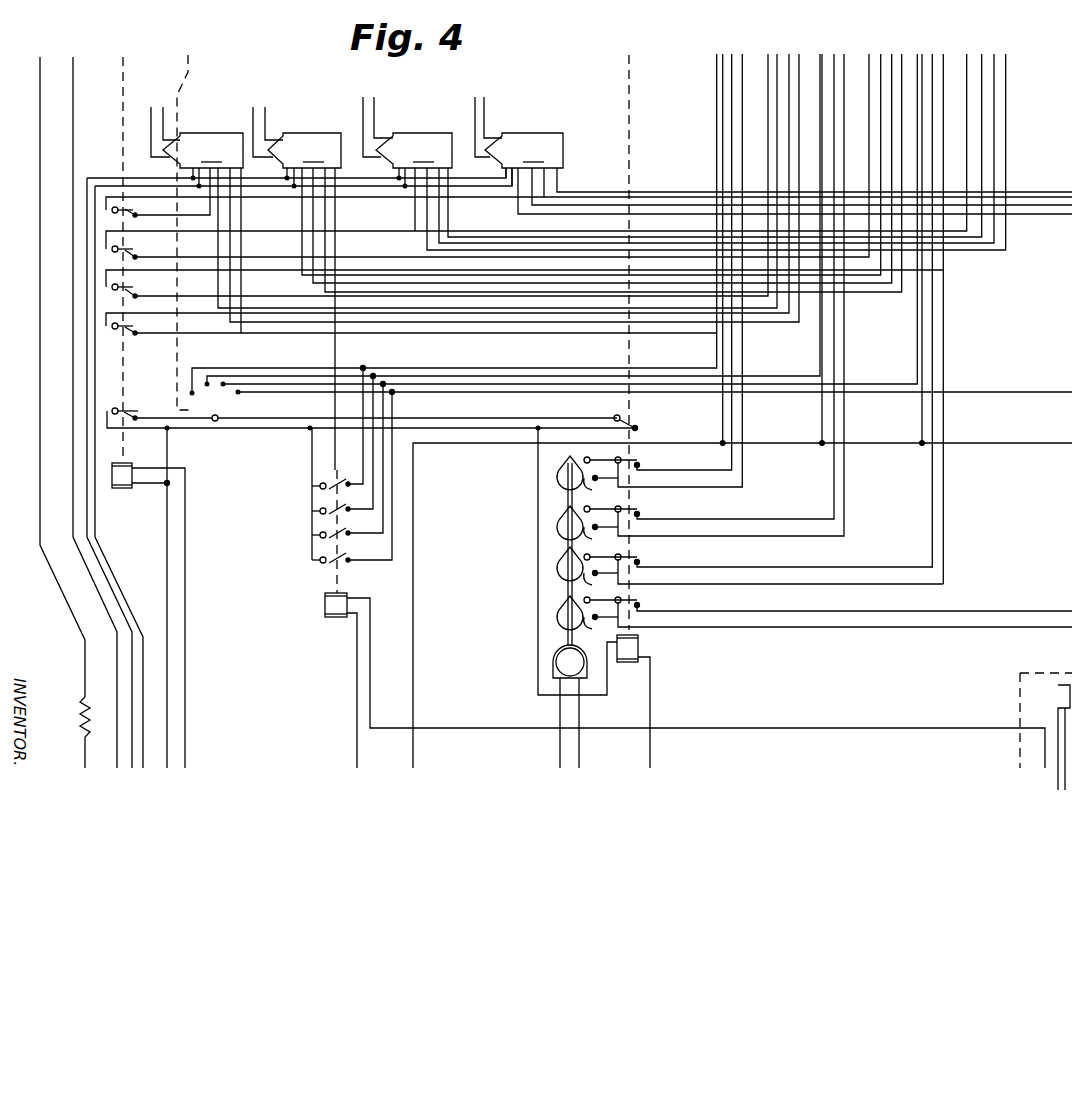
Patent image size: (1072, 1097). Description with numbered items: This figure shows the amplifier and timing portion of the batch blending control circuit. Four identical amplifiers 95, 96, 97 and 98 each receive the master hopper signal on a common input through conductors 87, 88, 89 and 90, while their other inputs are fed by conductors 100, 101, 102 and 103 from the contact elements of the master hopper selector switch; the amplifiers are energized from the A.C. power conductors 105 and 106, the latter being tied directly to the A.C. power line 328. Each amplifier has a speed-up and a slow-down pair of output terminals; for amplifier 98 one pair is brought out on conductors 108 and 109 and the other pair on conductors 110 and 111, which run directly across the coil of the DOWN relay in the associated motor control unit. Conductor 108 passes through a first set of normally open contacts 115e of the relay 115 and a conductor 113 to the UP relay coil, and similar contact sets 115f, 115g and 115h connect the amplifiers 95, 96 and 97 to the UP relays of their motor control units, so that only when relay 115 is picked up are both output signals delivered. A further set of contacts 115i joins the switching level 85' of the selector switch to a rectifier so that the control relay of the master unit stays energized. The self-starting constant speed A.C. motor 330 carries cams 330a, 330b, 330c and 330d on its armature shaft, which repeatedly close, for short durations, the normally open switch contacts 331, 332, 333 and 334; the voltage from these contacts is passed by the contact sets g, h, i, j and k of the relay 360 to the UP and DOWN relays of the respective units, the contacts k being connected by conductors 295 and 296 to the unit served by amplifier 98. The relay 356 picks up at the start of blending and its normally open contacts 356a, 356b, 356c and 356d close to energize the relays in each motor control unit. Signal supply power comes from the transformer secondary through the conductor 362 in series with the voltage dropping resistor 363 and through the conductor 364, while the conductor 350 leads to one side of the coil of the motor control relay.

The amplifier 95 is at (197, 146).
The amplifier 96 is at (297, 146).
The amplifier 97 is at (407, 141).
The amplifier 98 is at (519, 141).
The conductor 100 is at (151, 119).
The conductor 101 is at (253, 111).
The conductor 102 is at (363, 112).
The conductor 103 is at (475, 112).
The conductor 87 is at (163, 112).
The conductor 88 is at (265, 112).
The conductor 89 is at (374, 104).
The conductor 90 is at (484, 104).
The A.C. power conductor 105 is at (160, 170).
The A.C. power conductor 106 is at (110, 178).
The conductor 108 is at (153, 203).
The conductor 109 is at (527, 199).
The conductor 110 is at (560, 179).
The conductor 111 is at (558, 191).
The conductor 113 is at (284, 218).
The relay 115 is at (143, 455).
The relay contacts 115e is at (132, 213).
The relay contacts 115f is at (140, 254).
The relay contacts 115g is at (140, 293).
The relay contacts 115h is at (140, 332).
The relay contacts 115i is at (143, 412).
The switching level 85' is at (236, 430).
The conductor 362 is at (56, 590).
The resistor 363 is at (82, 713).
The conductor 364 is at (70, 477).
The relay 356 is at (320, 614).
The relay contacts 356a is at (350, 462).
The relay contacts 356b is at (320, 514).
The relay contacts 356c is at (317, 538).
The relay contacts 356d is at (326, 564).
The A.C. motor 330 is at (561, 658).
The cam 330a is at (555, 478).
The cam 330b is at (555, 525).
The cam 330c is at (555, 571).
The cam 330d is at (555, 619).
The switch contacts 331 is at (600, 487).
The switch contacts 332 is at (568, 541).
The switch contacts 333 is at (563, 590).
The switch contacts 334 is at (560, 636).
The relay 360 is at (646, 640).
The conductor 296 is at (1018, 608).
The conductor 295 is at (1010, 628).
The A.C. power line 328 is at (1056, 705).
The conductor 350 is at (1066, 674).
The relay contacts g is at (635, 421).
The relay contacts h is at (663, 270).
The relay contacts i is at (714, 295).
The relay contacts j is at (763, 319).
The relay contacts k is at (828, 609).